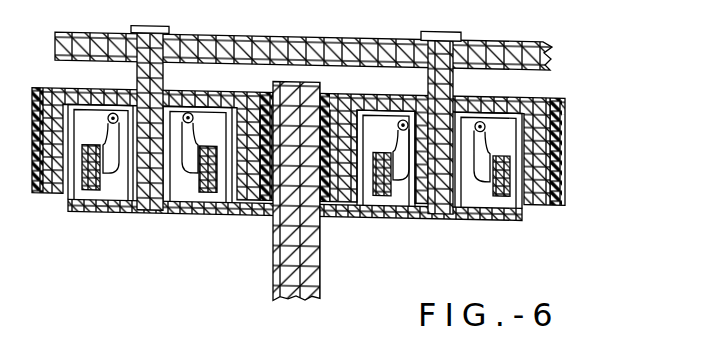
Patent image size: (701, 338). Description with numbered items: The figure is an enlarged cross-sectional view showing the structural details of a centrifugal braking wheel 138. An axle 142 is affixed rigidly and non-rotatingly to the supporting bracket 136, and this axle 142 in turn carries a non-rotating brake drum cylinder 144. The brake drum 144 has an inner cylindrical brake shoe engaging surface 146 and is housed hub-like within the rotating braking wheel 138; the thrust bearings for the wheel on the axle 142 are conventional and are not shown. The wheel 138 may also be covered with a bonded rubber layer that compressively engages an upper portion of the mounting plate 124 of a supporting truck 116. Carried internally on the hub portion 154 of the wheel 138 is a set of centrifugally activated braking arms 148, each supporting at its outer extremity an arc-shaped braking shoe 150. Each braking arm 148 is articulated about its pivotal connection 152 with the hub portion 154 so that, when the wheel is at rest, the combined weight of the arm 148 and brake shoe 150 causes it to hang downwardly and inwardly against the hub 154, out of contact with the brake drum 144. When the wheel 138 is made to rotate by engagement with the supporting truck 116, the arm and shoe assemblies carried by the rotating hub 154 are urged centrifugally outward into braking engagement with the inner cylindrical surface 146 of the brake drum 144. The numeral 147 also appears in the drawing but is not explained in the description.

The supporting truck 116 is at (333, 191).
The mounting plate 124 is at (324, 268).
The supporting bracket 136 is at (504, 42).
The centrifugal braking wheel 138 is at (344, 120).
The axle 142 is at (456, 89).
The brake drum cylinder 144 is at (522, 214).
The inner cylindrical brake shoe engaging surface 146 is at (566, 110).
The contact cup 147 is at (368, 112).
The braking arm 148 is at (376, 132).
The braking shoe 150 is at (310, 151).
The pivotal connection 152 is at (484, 127).
The hub portion 154 is at (476, 202).